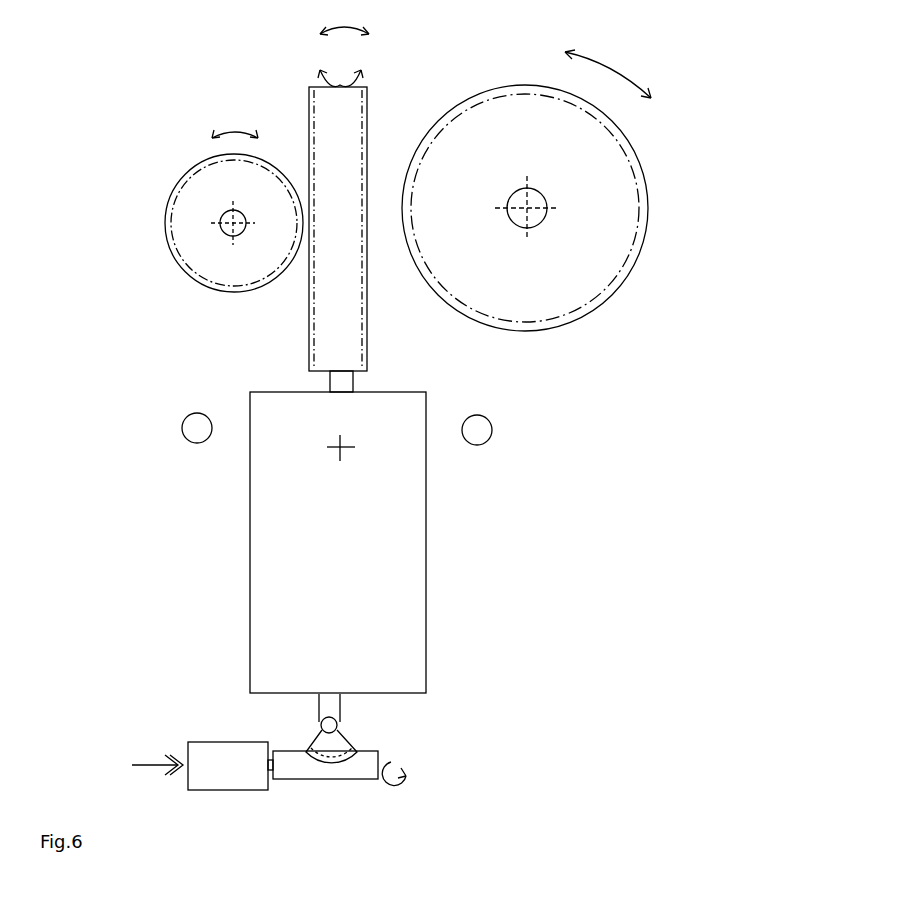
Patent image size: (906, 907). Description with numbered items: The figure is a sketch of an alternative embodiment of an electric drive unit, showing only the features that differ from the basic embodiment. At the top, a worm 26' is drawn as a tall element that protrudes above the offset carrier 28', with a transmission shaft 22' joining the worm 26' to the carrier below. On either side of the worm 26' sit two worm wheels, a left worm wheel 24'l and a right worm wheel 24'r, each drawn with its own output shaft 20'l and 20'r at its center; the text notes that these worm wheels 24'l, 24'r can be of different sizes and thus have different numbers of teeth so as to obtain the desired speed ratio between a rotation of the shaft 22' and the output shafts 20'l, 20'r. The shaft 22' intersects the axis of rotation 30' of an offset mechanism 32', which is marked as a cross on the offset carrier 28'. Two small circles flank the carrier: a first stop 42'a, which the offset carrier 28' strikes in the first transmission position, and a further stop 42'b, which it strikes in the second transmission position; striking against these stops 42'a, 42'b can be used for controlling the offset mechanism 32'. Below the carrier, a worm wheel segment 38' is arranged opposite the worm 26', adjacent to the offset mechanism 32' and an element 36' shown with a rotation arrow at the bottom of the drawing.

The worm 26' is at (283, 199).
The left worm wheel 24'l is at (219, 211).
The left output shaft 20'l is at (168, 244).
The right worm wheel 24'r is at (592, 190).
The right output shaft 20'r is at (628, 207).
The transmission shaft 22' is at (390, 376).
The offset carrier 28' is at (394, 542).
The axis of rotation 30' is at (256, 496).
The first stop 42'a is at (184, 410).
The further stop 42'b is at (526, 422).
The worm wheel segment 38' is at (281, 734).
The drive shaft unit 36' is at (392, 754).
The offset mechanism 32' is at (179, 766).